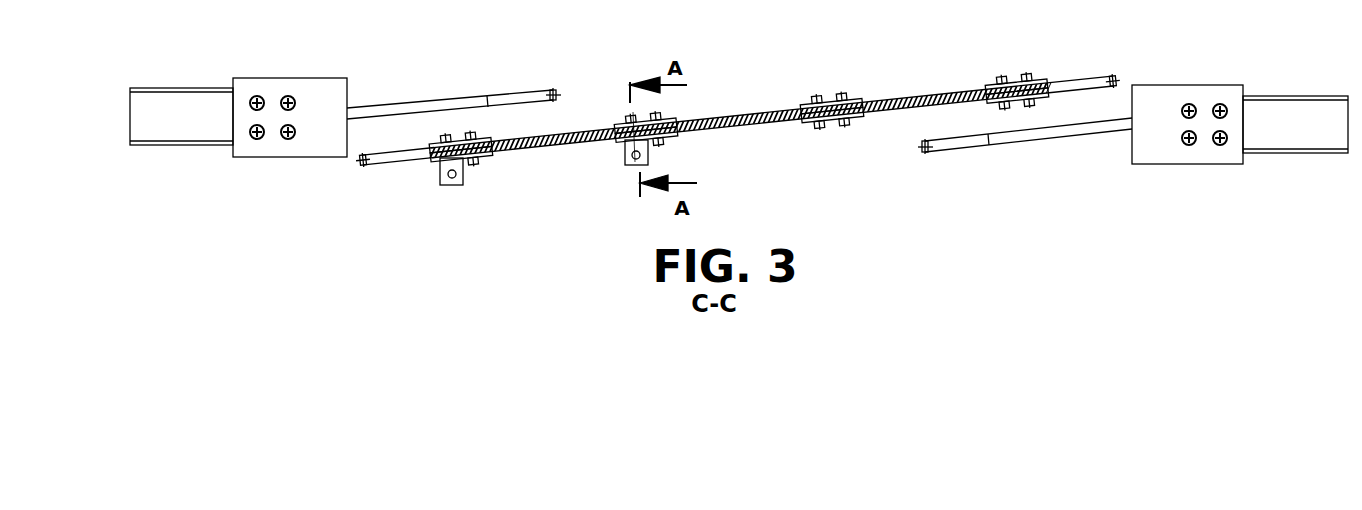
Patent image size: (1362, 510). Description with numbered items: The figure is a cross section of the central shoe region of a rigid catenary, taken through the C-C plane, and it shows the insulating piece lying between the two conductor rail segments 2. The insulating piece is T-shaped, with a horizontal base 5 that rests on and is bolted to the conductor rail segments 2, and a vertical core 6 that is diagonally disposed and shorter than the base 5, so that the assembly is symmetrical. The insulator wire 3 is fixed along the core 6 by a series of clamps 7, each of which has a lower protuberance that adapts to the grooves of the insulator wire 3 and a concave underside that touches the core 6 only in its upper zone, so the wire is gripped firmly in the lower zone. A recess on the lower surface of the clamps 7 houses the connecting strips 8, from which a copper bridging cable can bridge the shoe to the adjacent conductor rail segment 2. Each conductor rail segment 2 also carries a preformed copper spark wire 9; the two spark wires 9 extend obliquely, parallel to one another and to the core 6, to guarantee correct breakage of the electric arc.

The conductor rail segment 2 is at (180, 145).
The insulator wire 3 is at (388, 162).
The base 5 is at (300, 147).
The core 6 is at (772, 117).
The clamp 7 is at (860, 98).
The connecting strip 8 is at (447, 185).
The spark wire 9 is at (458, 103).